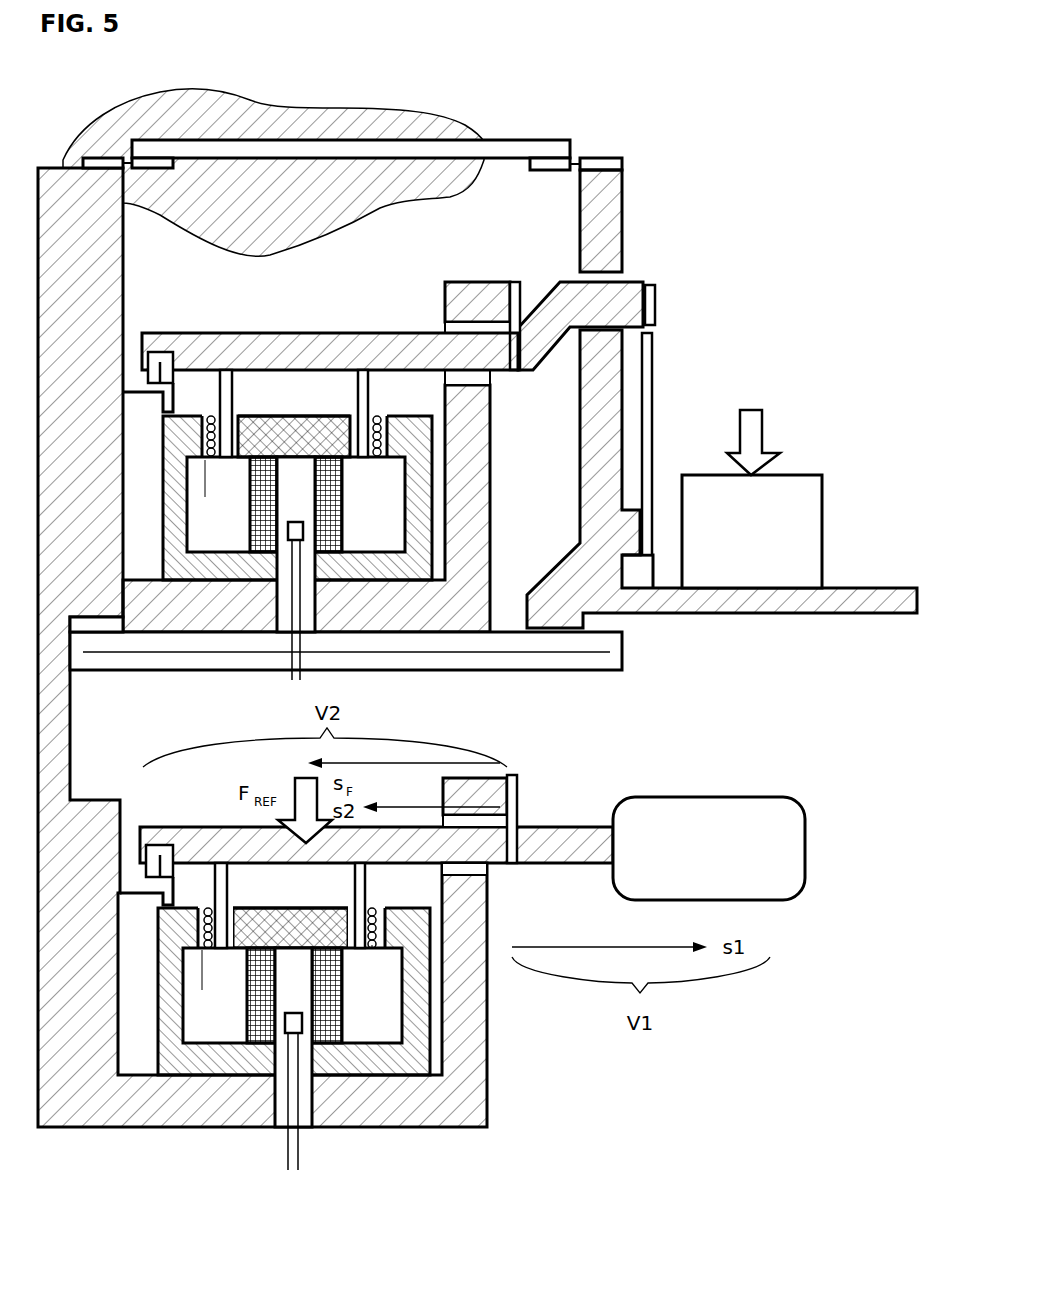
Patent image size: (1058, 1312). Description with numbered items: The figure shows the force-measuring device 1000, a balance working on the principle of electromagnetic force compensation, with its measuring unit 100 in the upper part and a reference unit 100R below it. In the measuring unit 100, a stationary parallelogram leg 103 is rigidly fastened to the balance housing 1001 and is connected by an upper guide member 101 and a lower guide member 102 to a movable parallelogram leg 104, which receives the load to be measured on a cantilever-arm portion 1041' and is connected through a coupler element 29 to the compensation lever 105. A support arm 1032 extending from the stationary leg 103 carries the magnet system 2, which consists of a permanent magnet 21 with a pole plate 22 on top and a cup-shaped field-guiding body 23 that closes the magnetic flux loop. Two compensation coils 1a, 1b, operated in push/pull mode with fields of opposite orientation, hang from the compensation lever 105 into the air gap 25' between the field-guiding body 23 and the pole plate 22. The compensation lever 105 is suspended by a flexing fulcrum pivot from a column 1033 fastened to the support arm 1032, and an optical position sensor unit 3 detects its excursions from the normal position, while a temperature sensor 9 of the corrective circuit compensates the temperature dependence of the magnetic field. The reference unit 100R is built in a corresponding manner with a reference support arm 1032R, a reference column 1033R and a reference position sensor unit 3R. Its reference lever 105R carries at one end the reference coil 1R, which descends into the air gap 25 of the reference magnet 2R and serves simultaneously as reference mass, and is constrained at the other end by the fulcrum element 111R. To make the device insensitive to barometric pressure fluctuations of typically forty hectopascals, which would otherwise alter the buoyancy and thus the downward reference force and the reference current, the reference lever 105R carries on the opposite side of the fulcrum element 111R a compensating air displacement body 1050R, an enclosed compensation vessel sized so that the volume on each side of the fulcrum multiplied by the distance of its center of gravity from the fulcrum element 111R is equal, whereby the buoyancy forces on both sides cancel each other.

The balance housing 1001 is at (370, 125).
The guide member 101 is at (503, 148).
The force-measuring device 1000 is at (798, 153).
The measuring unit 100 is at (653, 174).
The movable parallelogram leg 104 is at (608, 230).
The stationary parallelogram leg 103 is at (96, 262).
The column 1033 is at (468, 282).
The compensation lever 105 is at (298, 342).
The optical position sensor unit 3 is at (158, 357).
The coupler element 29 is at (647, 347).
The pole plate 22 is at (298, 432).
The compensation coil 1b is at (380, 440).
The compensation coil 1a is at (303, 459).
The measuring winding 25' is at (213, 494).
The temperature sensor 9 is at (296, 568).
The cup-shaped field-guiding body 23 is at (420, 512).
The magnet system 2 is at (348, 659).
The permanent magnet 21 is at (248, 527).
The guide member 102 is at (385, 655).
The support arm 1032 is at (420, 613).
The load plate 1041' is at (800, 483).
The reference unit 100R is at (665, 742).
The reference pivot bearing 3R is at (155, 853).
The reference lever 105R is at (222, 836).
The fulcrum element 111R is at (523, 817).
The compensating air displacement body 1050R is at (709, 848).
The air gap 25 is at (207, 986).
The reference coil 1R is at (368, 946).
The reference support block 1033R is at (470, 1002).
The reference support cradle 1032R is at (418, 1095).
The reference magnet 2R is at (289, 1041).